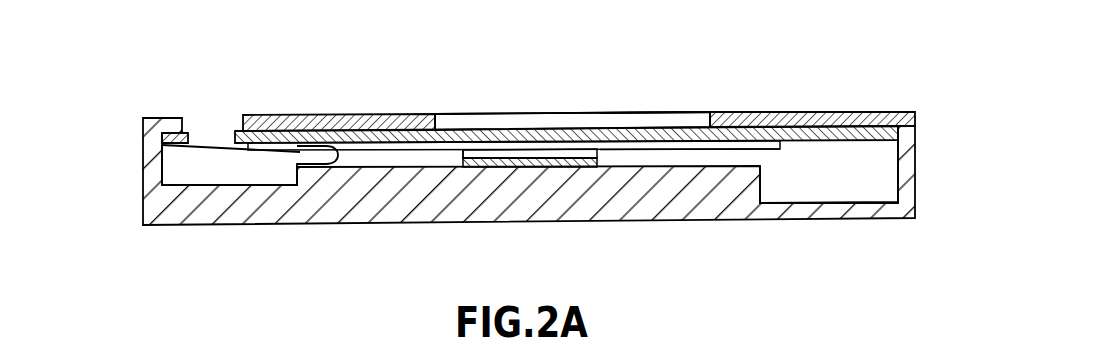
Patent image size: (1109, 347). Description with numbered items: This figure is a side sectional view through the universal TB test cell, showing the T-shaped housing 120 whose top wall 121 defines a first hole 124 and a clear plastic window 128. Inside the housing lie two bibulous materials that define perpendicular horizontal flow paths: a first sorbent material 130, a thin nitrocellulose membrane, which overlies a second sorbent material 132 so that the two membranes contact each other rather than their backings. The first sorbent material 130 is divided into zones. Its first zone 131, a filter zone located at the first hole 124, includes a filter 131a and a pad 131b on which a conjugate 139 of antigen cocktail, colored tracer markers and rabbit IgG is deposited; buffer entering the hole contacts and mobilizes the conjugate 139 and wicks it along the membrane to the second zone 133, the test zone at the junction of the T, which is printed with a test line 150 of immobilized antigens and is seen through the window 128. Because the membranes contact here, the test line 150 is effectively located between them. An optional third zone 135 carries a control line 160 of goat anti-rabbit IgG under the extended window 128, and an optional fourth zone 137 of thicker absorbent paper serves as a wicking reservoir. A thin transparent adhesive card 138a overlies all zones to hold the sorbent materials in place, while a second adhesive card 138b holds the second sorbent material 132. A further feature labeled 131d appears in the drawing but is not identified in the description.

The T-shaped housing 120 is at (687, 219).
The top wall 121 is at (848, 112).
The first hole 124 is at (242, 123).
The window 128 is at (608, 124).
The first sorbent material 130 is at (385, 147).
The first zone 131 is at (382, 83).
The filter 131a is at (217, 158).
The pad 131b is at (305, 155).
The right recess 131d is at (873, 167).
The second sorbent material 132 is at (470, 167).
The second zone 133 is at (510, 107).
The third zone 135 is at (663, 103).
The fourth zone 137 is at (797, 110).
The plastic film or card 138a is at (180, 131).
The plastic film or card 138b is at (535, 167).
The conjugate 139 is at (334, 148).
The test line 150 is at (527, 150).
The control line 160 is at (678, 148).